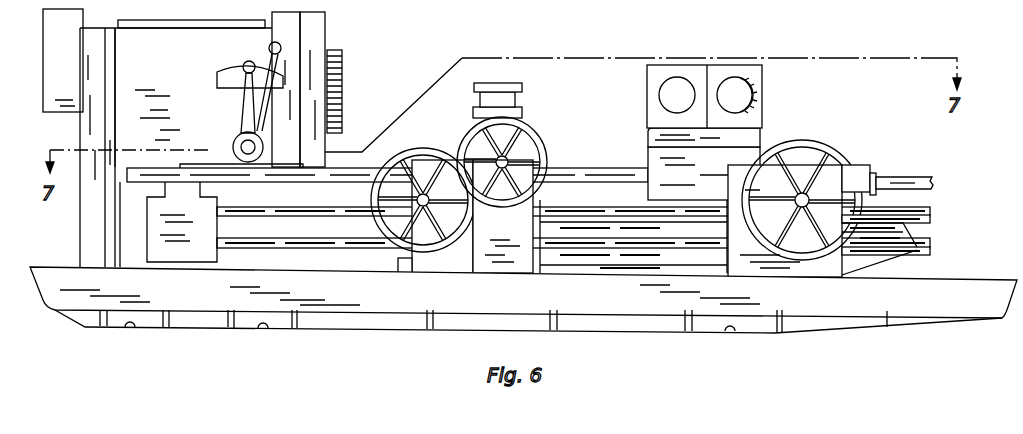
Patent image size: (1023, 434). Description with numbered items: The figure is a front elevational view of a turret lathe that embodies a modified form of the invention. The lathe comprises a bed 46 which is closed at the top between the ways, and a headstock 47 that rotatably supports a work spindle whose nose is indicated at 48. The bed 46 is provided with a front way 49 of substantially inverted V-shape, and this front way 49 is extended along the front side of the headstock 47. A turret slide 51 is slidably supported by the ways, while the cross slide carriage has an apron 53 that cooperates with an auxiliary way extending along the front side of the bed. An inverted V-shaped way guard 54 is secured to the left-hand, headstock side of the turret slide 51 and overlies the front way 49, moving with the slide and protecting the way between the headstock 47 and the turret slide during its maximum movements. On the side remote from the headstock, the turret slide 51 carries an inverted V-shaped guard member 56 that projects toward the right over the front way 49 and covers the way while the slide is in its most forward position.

The bed 46 is at (627, 258).
The headstock 47 is at (172, 47).
The nose of the work spindle 48 is at (338, 70).
The front way 49 is at (131, 167).
The turret slide 51 is at (735, 157).
The apron 53 is at (483, 240).
The way guard 54 is at (598, 181).
The guard member 56 is at (897, 184).